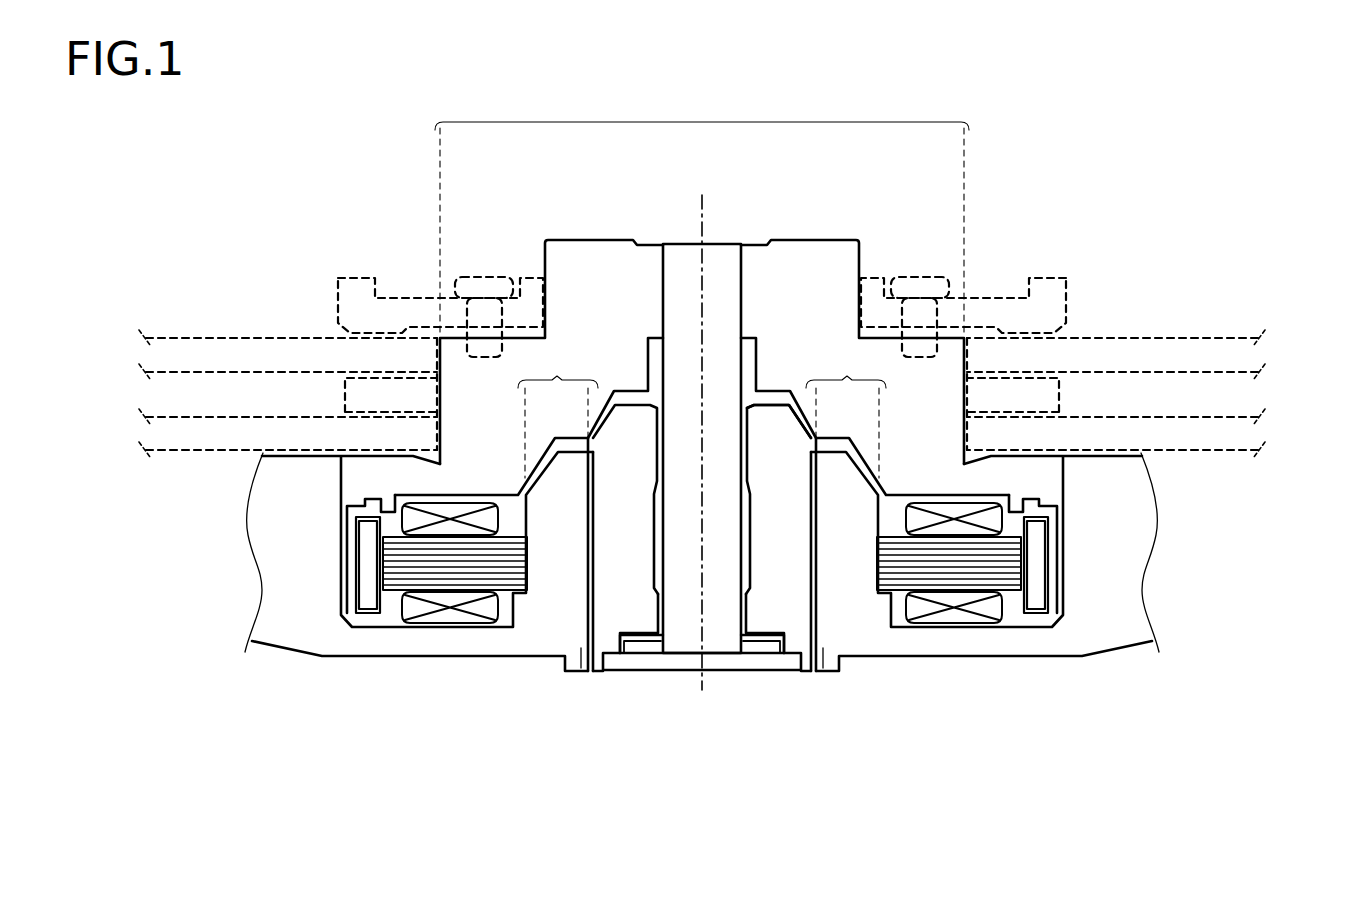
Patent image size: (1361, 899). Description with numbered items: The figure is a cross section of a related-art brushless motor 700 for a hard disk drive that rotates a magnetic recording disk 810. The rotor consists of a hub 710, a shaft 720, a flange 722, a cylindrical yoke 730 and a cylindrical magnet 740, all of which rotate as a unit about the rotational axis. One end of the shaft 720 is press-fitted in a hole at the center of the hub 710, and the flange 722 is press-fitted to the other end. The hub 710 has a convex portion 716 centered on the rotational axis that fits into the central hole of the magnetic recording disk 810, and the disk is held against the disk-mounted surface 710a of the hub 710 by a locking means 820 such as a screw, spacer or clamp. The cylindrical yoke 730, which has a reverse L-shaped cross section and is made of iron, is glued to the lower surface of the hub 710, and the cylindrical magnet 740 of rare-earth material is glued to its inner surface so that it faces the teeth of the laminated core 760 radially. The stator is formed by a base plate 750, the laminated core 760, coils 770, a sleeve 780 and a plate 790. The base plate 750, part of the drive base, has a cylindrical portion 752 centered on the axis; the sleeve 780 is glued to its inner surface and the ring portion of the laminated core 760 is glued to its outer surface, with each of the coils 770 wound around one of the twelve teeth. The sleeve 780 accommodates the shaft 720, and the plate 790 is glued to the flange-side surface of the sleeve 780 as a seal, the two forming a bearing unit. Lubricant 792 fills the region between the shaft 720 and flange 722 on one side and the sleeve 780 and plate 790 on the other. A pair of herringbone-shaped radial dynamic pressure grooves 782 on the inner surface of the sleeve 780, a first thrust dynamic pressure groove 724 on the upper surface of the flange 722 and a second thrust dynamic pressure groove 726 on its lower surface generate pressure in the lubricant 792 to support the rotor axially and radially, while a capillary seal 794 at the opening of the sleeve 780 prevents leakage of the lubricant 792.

The brushless motor 700 is at (771, 821).
The convex portion 716 is at (702, 122).
The hub 710 is at (610, 253).
The disk-mounted surface 710a is at (368, 450).
The shaft 720 is at (682, 257).
The flange 722 is at (640, 648).
The first herringbone-shaped thrust dynamic pressure groove 724 is at (643, 637).
The second herringbone-shaped thrust dynamic pressure groove 726 is at (652, 656).
The cylindrical yoke 730 is at (347, 522).
The cylindrical magnet 740 is at (370, 568).
The base plate 750 is at (252, 618).
The cylindrical portion 752 is at (557, 377).
The laminated core 760 is at (398, 577).
The coils 770 is at (448, 617).
The sleeve 780 is at (602, 638).
The radial dynamic pressure grooves 782 is at (658, 468).
The plate 790 is at (713, 664).
The lubricant 792 is at (730, 403).
The capillary seal 794 is at (643, 408).
The magnetic recording disk 810 is at (157, 435).
The locking means 820 is at (380, 392).